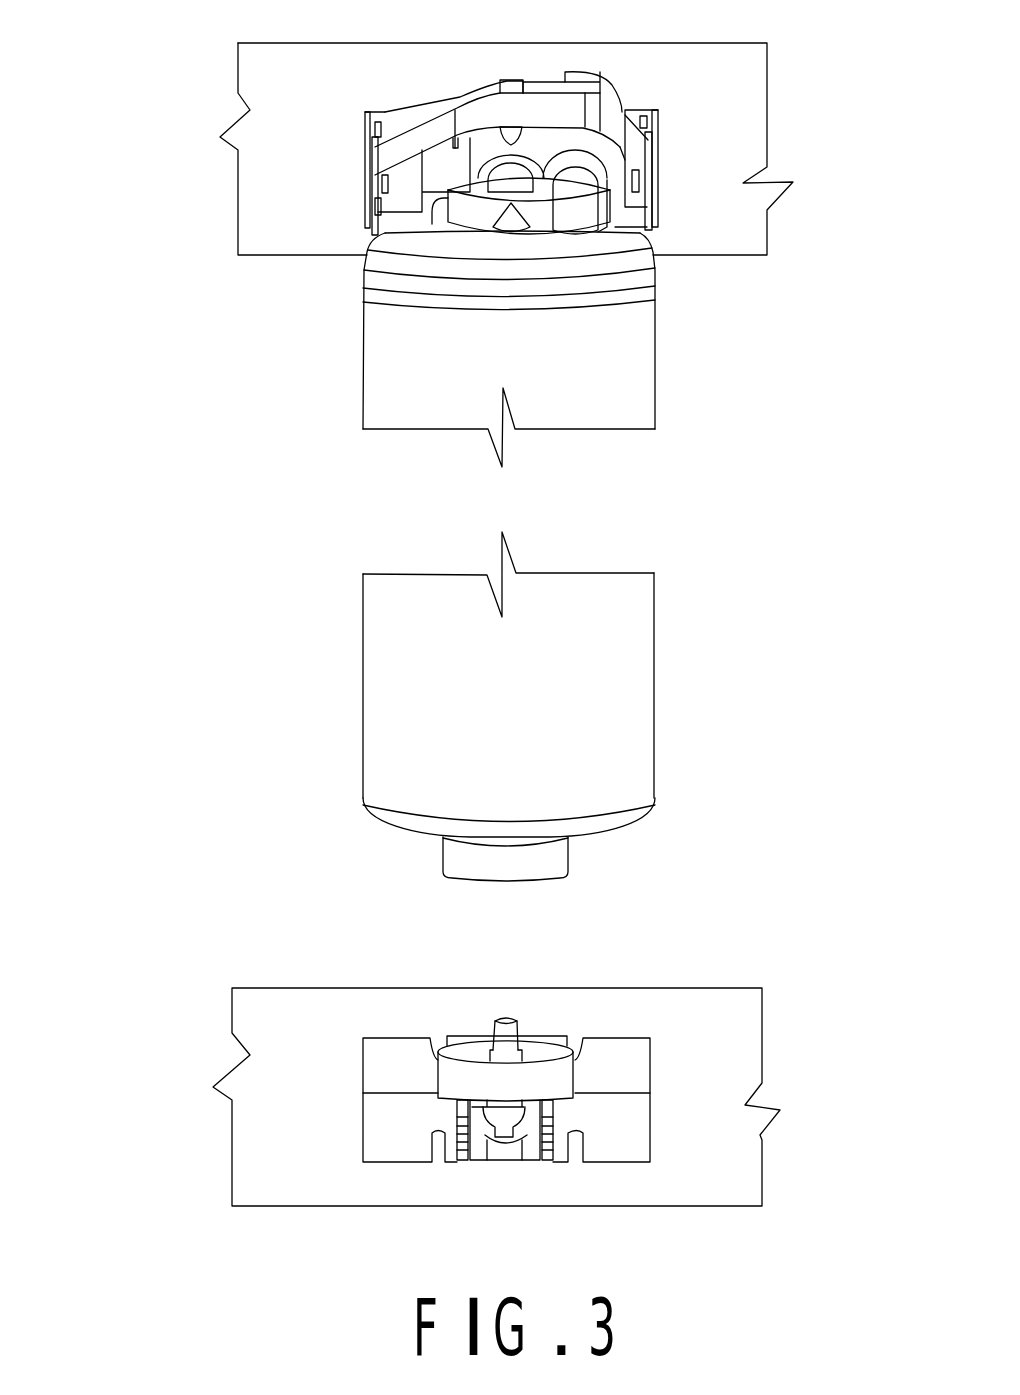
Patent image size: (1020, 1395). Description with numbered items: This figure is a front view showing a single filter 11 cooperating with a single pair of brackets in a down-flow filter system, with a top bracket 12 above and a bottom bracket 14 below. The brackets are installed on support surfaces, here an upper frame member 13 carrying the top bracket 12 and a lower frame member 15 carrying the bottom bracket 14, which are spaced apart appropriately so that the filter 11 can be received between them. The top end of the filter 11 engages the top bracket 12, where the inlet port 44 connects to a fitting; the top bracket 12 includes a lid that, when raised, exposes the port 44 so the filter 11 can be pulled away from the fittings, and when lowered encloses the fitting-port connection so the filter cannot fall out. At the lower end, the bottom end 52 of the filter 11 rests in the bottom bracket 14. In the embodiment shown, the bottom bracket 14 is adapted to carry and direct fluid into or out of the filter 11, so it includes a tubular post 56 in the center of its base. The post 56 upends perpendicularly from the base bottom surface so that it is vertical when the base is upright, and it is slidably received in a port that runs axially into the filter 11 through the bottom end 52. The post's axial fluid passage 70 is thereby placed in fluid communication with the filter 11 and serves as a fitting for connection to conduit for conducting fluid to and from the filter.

The filter 11 is at (413, 653).
The top bracket 12 is at (323, 77).
The upper frame member 13 is at (293, 175).
The bottom bracket 14 is at (327, 1110).
The lower frame member 15 is at (732, 1047).
The inlet port 44 is at (508, 179).
The bottom end 52 is at (516, 860).
The post 56 is at (502, 1031).
The axial fluid passage 70 is at (512, 1018).